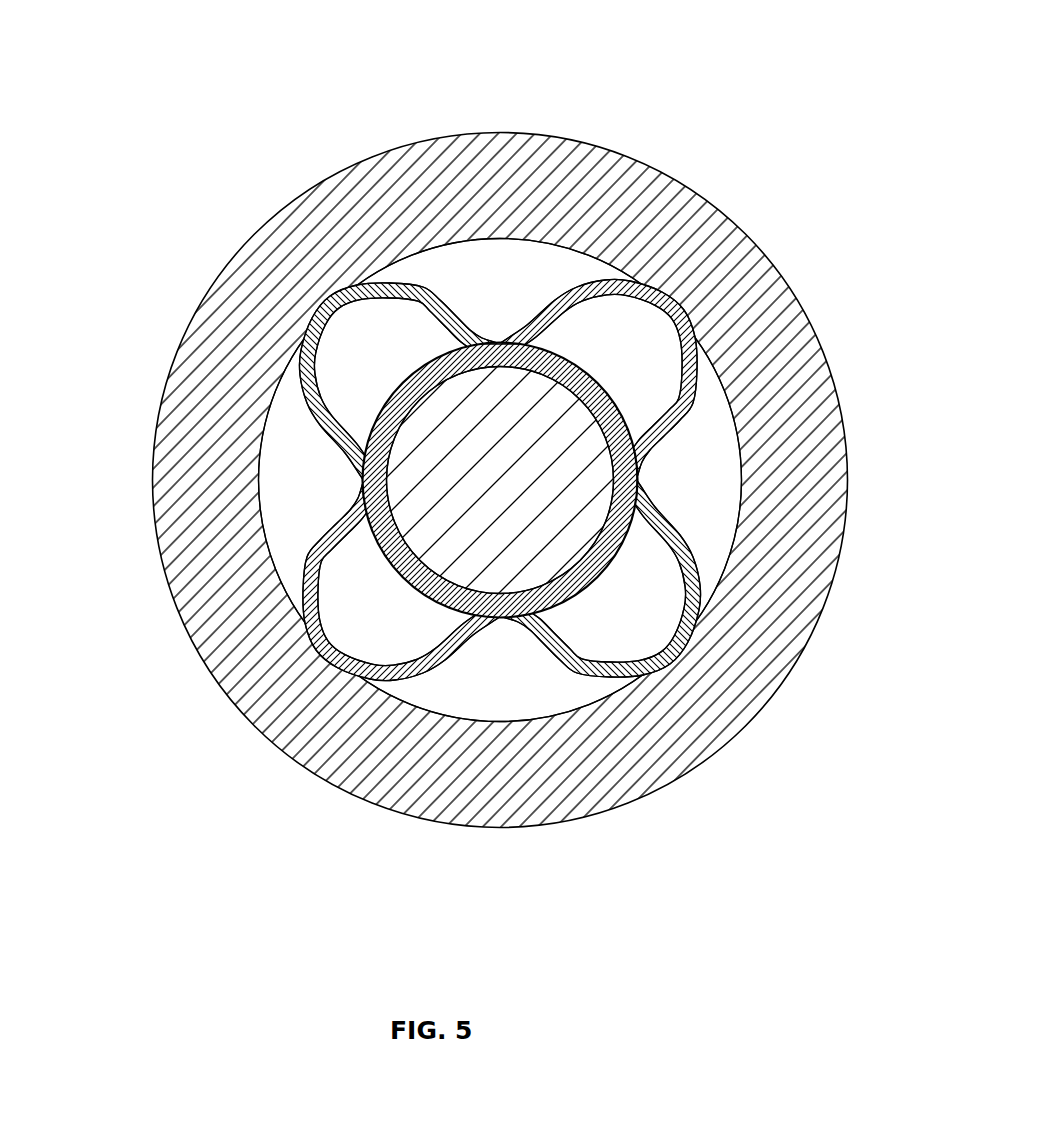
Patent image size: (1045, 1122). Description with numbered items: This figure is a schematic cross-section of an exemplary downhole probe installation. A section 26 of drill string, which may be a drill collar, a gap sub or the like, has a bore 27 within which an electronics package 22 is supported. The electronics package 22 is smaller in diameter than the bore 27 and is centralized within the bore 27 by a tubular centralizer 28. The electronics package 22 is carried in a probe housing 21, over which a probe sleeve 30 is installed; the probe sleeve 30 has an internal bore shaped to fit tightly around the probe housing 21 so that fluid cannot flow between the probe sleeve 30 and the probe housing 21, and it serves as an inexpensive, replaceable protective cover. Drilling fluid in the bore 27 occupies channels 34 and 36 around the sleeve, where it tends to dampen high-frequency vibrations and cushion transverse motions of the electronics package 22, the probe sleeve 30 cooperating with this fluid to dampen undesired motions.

The probe housing 21 is at (383, 556).
The electronics package 22 is at (412, 430).
The section of drill string 26 is at (637, 175).
The bore 27 is at (697, 497).
The tubular centralizer 28 is at (478, 332).
The probe sleeve 30 is at (615, 402).
The channel 34 is at (272, 505).
The channel 36 is at (605, 622).